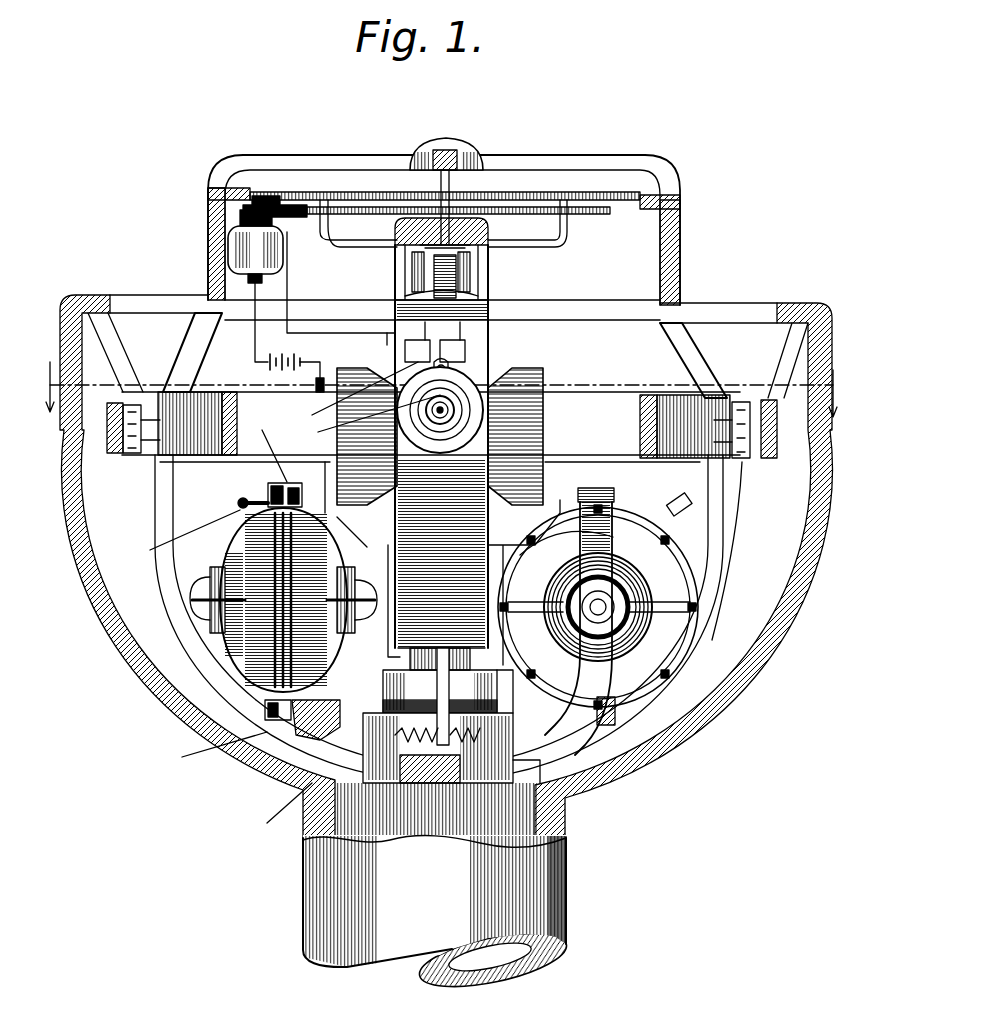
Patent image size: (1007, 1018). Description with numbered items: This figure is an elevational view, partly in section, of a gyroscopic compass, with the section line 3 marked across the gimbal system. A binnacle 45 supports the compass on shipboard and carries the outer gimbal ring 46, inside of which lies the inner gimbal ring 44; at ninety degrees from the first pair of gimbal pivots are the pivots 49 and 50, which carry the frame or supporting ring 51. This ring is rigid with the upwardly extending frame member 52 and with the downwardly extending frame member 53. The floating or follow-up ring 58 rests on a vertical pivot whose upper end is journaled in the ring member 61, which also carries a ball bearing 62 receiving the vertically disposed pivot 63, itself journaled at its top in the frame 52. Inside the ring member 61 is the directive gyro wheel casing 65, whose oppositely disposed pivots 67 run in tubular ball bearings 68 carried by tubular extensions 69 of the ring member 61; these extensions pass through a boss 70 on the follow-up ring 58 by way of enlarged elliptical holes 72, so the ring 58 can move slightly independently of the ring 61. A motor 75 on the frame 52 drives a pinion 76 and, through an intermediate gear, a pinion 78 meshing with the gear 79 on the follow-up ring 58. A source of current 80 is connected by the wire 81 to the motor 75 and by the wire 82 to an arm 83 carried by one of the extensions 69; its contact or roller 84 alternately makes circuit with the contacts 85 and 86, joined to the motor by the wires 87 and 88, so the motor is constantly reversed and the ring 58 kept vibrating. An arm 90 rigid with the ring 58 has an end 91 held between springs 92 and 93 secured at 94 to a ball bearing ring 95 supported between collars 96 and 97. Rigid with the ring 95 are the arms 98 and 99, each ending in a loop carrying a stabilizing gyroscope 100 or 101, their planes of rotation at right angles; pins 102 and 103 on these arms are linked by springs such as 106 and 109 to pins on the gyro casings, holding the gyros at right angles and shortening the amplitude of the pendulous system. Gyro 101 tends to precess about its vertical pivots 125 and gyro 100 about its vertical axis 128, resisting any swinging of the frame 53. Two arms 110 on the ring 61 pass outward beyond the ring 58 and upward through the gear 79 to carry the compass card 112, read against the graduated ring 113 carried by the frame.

The section line 3- 3 is at (441, 389).
The inner gimbal ring 44 is at (128, 458).
The binnacle 45 is at (86, 568).
The outer gimbal ring 46 is at (115, 453).
The pivot 49 is at (748, 398).
The pivot 50 is at (152, 392).
The frame or supporting ring 51 is at (205, 392).
The upwardly extending frame member 52 is at (195, 345).
The downwardly extending frame member 53 is at (172, 532).
The floating ring 58 is at (400, 265).
The ring member 61 is at (478, 268).
The ball bearing 62 is at (467, 247).
The vertically disposed pivot 63 is at (452, 175).
The directive gyro wheel casing 65 is at (415, 283).
The pivot 67 is at (470, 412).
The tubular ball bearing 68 is at (445, 418).
The tubular extension 69 is at (413, 410).
The boss 70 is at (447, 372).
The enlarged hole 72 is at (470, 392).
The motor 75 is at (235, 232).
The pinion 76 is at (215, 190).
The pinion 78 is at (262, 196).
The gear 79 is at (362, 207).
The source of current 80 is at (285, 354).
The wire 81 is at (252, 334).
The wire 82 is at (322, 378).
The arm 83 is at (363, 421).
The contact or roller 84 is at (460, 348).
The contact 85 is at (350, 395).
The contact 86 is at (470, 338).
The wire 87 is at (386, 338).
The wire 88 is at (333, 320).
The arm 90 is at (490, 668).
The end 91 is at (418, 783).
The spring 92 is at (392, 708).
The spring 93 is at (545, 672).
The securing point 94 is at (400, 730).
The ball bearing ring 95 is at (275, 811).
The collar 96 is at (424, 717).
The collar 97 is at (510, 780).
The arm 98 is at (280, 483).
The arm 99 is at (612, 495).
The stabilizing gyroscope 100 is at (257, 553).
The stabilizing gyroscope 101 is at (648, 566).
The pin 102 is at (240, 502).
The pin 103 is at (676, 503).
The spring 106 is at (171, 537).
The spring 109 is at (566, 544).
The arm 110 is at (368, 244).
The compass card 112 is at (305, 192).
The ring 113 is at (655, 198).
The vertical pivot 125 is at (594, 488).
The vertical axis 128 is at (213, 589).